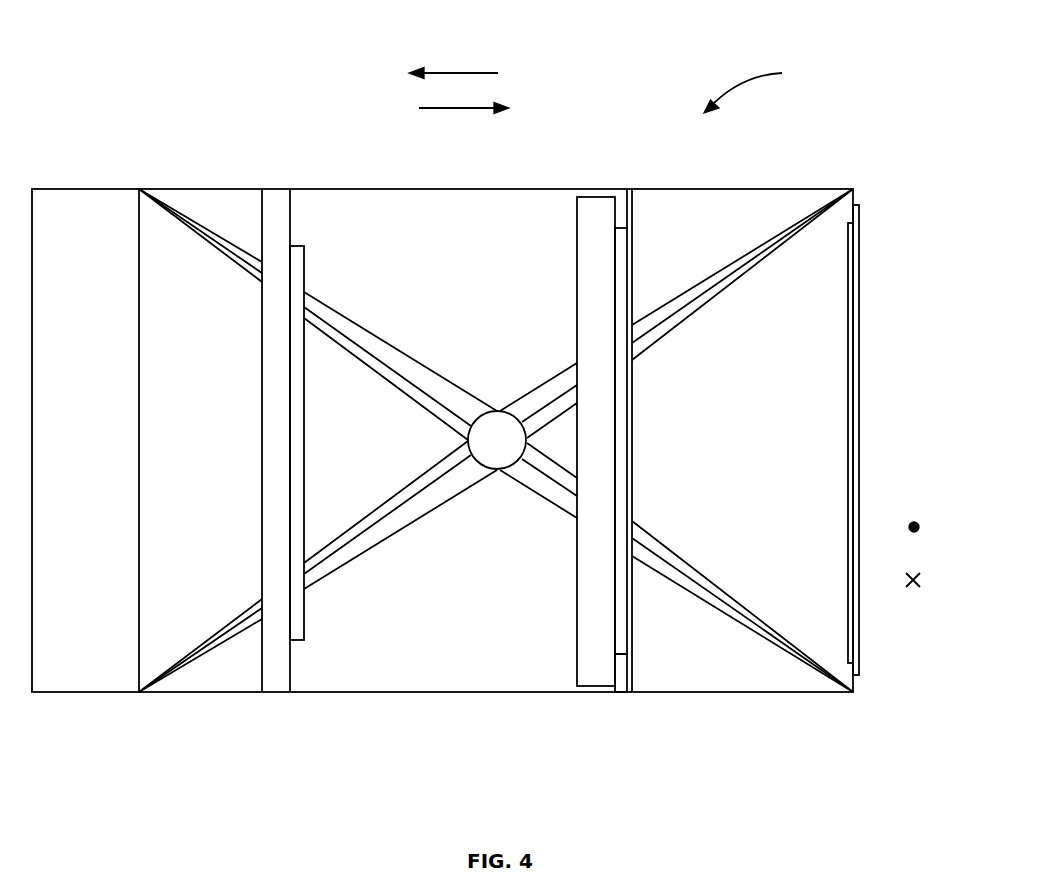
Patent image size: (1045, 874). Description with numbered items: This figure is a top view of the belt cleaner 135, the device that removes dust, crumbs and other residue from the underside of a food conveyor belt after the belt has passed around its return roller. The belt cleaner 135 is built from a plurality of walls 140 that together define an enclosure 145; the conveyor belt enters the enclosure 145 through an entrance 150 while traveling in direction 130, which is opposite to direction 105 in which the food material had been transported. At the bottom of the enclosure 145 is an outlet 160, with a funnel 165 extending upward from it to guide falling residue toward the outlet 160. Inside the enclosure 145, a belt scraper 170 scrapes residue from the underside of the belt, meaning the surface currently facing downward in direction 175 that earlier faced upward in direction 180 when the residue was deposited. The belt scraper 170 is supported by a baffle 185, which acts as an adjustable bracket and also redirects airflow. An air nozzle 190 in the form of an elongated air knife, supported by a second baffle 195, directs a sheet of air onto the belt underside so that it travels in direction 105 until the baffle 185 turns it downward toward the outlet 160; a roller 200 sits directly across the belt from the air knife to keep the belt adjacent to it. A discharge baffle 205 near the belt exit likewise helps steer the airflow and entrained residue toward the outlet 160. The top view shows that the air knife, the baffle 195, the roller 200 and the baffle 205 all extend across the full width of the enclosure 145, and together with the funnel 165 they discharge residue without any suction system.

The direction 105 is at (458, 72).
The direction 130 is at (433, 107).
The belt cleaner 135 is at (762, 87).
The walls 140 is at (340, 225).
The enclosure 145 is at (405, 222).
The entrance 150 is at (110, 188).
The outlet 160 is at (494, 460).
The funnel 165 is at (480, 222).
The belt scraper 170 is at (305, 475).
The direction 175 is at (912, 589).
The direction 180 is at (914, 522).
The baffle 185 is at (262, 490).
The air nozzle 190 is at (633, 632).
The baffle 195 is at (633, 675).
The roller 200 is at (577, 282).
The discharge baffle 205 is at (848, 350).